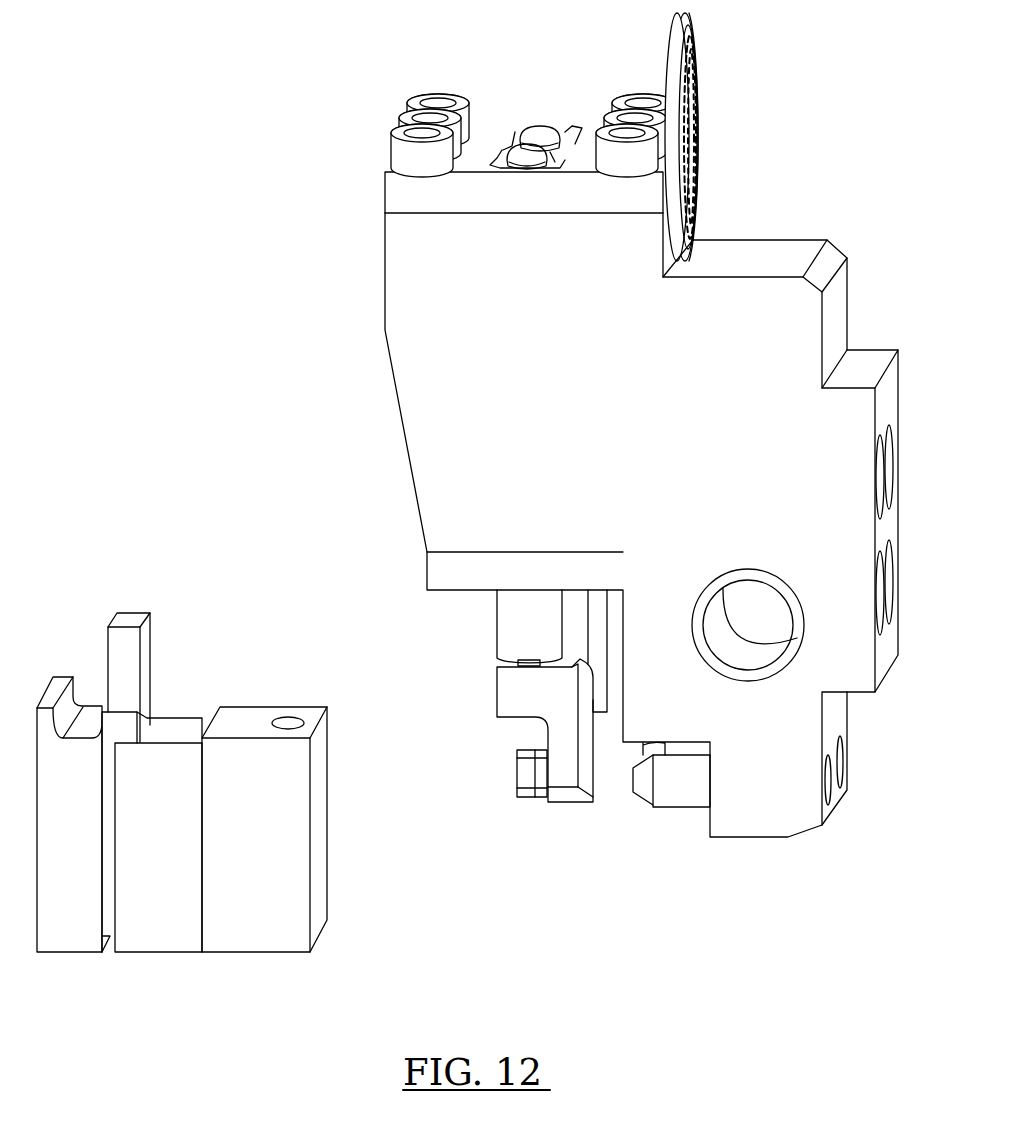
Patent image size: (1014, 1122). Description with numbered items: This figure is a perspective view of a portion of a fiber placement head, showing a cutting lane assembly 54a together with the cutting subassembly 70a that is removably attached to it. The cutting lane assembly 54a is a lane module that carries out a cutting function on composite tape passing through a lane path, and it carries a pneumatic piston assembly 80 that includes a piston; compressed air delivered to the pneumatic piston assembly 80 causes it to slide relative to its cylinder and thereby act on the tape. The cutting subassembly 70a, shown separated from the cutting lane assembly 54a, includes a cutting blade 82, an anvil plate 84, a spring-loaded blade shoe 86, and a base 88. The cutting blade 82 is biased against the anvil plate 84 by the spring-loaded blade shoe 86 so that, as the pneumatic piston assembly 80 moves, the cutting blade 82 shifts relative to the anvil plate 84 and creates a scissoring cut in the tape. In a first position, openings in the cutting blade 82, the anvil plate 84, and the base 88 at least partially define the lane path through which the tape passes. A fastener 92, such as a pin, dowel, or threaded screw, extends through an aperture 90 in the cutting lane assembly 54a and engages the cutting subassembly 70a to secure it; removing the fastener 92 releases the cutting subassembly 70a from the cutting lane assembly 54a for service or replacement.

The cutting lane assembly 54a is at (591, 425).
The aperture 90 is at (562, 390).
The fastener 92 is at (690, 257).
The pneumatic piston assembly 80 is at (497, 630).
The cutting subassembly 70a is at (186, 793).
The cutting blade 82 is at (132, 613).
The anvil plate 84 is at (63, 677).
The spring-loaded blade shoe 86 is at (188, 717).
The base 88 is at (303, 705).